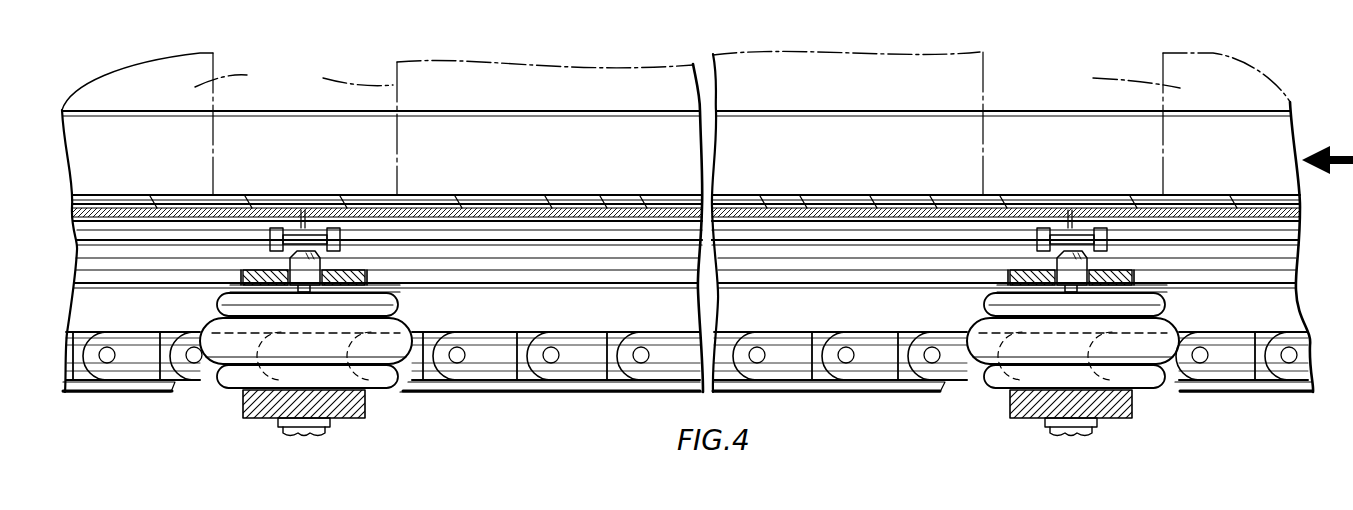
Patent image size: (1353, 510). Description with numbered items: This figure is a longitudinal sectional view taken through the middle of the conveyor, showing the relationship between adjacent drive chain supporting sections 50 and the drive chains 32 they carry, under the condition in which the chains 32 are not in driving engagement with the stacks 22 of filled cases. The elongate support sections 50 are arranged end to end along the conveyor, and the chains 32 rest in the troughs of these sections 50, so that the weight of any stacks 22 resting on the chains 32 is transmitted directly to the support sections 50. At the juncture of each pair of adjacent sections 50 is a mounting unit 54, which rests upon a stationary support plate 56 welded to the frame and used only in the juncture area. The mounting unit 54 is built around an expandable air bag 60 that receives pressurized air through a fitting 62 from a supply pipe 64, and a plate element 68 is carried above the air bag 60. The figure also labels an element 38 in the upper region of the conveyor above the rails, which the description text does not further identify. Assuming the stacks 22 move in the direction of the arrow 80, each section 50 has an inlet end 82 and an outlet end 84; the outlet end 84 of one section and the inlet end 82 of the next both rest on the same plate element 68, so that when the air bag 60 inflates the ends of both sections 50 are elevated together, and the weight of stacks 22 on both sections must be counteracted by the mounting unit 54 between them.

The stacks of cases 22 is at (676, 123).
The panel track rail 38 is at (893, 135).
The drive chain supporting section 50 is at (124, 143).
The drive chain 32 is at (623, 207).
The mounting unit 54 is at (185, 325).
The air bag 60 is at (406, 362).
The support plate 56 is at (352, 417).
The plate element 68 is at (1152, 257).
The inlet end 82 is at (293, 207).
The outlet end 84 is at (312, 205).
The supply pipe 64 is at (851, 237).
The fitting 62 is at (1040, 258).
The arrow 80 is at (1343, 152).